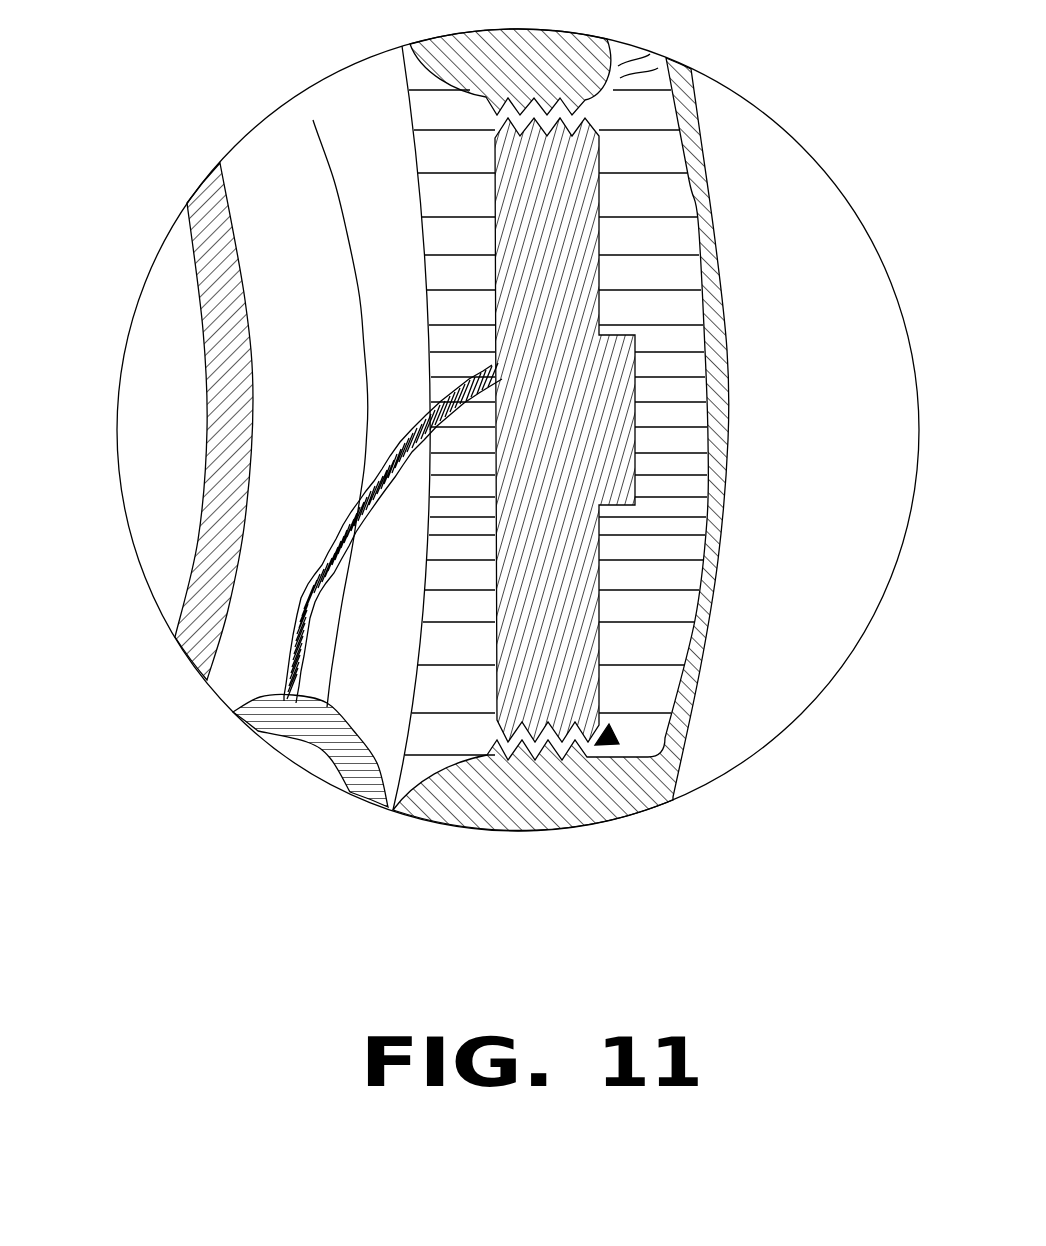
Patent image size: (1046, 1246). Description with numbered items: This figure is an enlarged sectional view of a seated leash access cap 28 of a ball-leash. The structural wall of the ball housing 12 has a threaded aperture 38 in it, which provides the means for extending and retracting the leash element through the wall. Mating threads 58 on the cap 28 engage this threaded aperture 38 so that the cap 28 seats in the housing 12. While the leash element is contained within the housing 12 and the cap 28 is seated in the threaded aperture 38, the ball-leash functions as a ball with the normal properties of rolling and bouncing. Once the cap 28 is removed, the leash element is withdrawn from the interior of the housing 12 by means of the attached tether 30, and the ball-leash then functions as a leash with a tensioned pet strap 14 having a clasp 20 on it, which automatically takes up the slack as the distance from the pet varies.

The ball housing 12 is at (627, 787).
The pet strap 14 is at (205, 345).
The clasp 20 is at (253, 727).
The leash access cap 28 is at (582, 285).
The tether 30 is at (330, 537).
The threaded aperture 38 is at (665, 522).
The mating threads 58 is at (612, 735).